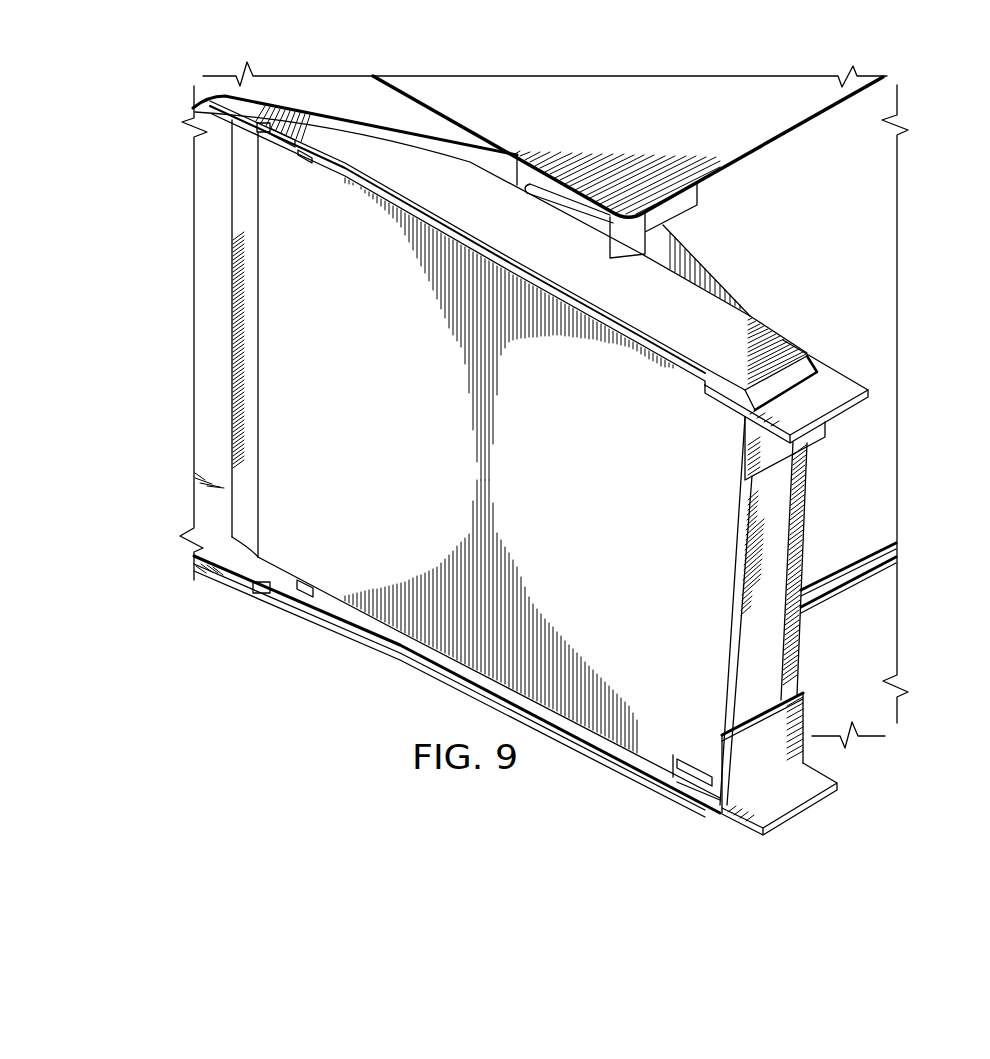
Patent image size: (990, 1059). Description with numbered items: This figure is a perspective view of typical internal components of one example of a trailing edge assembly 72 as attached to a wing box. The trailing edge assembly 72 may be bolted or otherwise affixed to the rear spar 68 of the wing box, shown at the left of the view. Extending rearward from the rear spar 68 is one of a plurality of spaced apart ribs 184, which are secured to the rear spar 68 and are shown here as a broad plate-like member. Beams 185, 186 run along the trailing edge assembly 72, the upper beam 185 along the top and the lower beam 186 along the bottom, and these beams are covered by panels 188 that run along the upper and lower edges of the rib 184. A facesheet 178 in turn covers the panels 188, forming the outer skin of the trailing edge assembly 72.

The rear spar 68 is at (203, 327).
The trailing edge assembly 72 is at (823, 641).
The facesheet 178 is at (897, 608).
The rib 184 is at (374, 423).
The beam 185 is at (847, 413).
The beam 186 is at (800, 812).
The panel 188 is at (748, 332).